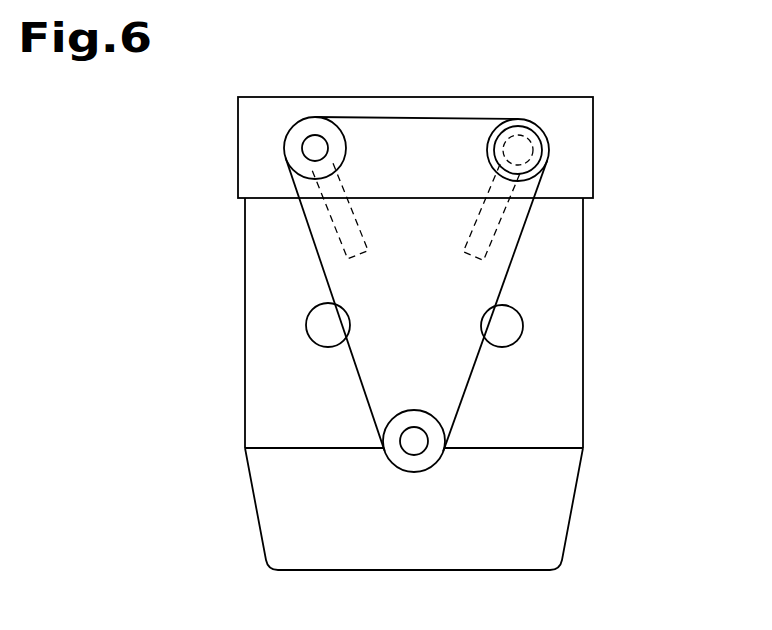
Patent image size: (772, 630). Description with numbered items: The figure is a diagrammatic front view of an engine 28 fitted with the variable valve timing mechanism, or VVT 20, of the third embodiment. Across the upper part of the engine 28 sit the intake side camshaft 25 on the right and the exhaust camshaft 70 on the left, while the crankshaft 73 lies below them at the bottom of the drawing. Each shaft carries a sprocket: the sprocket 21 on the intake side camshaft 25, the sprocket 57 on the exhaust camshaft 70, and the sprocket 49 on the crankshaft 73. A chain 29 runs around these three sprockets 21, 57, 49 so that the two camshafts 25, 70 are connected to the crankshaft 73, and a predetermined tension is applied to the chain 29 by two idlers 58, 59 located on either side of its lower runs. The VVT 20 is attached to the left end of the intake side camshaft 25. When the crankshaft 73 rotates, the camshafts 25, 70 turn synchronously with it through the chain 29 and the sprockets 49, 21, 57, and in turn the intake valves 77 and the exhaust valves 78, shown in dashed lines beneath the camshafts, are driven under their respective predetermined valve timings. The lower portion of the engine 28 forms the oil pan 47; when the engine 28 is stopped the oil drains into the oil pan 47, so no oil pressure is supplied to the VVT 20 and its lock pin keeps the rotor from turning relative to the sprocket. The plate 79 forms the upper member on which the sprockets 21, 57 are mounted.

The VVT 20 is at (420, 361).
The sprocket 21 is at (538, 147).
The intake side camshaft 25 is at (494, 148).
The engine 28 is at (377, 144).
The chain 29 is at (512, 252).
The oil pan 47 is at (258, 518).
The sprocket 49 is at (415, 463).
The sprocket 57 is at (333, 116).
The idler 58 is at (322, 345).
The idler 59 is at (510, 345).
The exhaust camshaft 70 is at (328, 148).
The crankshaft 73 is at (411, 448).
The intake valves 77 is at (478, 218).
The exhaust valves 78 is at (352, 216).
The frame plate 79 is at (240, 166).